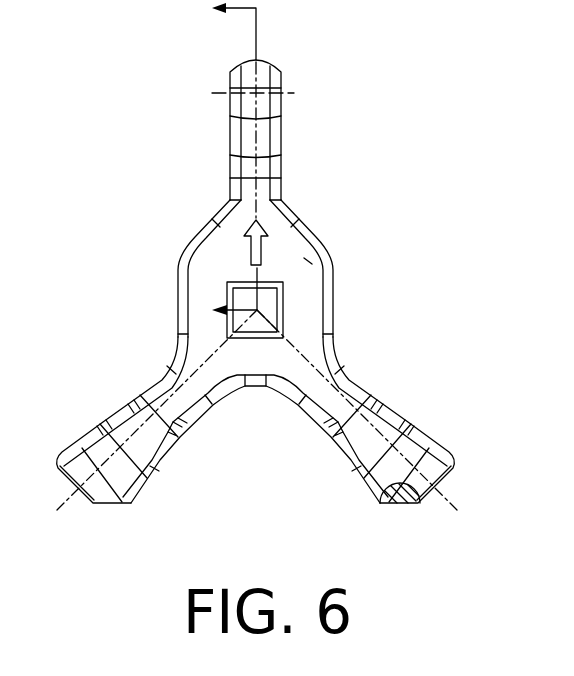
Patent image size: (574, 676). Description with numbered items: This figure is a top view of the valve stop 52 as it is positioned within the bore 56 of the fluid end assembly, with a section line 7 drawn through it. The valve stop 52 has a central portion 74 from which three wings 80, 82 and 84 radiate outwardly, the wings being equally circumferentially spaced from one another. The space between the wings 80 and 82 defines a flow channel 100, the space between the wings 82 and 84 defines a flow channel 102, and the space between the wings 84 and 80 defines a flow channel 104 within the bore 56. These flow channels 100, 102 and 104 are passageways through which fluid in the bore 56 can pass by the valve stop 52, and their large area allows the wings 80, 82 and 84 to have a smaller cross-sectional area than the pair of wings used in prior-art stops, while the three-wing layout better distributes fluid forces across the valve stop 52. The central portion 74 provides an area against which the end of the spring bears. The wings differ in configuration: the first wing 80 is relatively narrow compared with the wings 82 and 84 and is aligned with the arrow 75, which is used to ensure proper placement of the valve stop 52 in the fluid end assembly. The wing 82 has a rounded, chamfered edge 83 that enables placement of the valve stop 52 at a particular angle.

The section line 7- 7 is at (243, 161).
The valve stop 52 is at (263, 271).
The bore 56 is at (147, 144).
The central portion 74 is at (303, 268).
The arrow 75 is at (266, 231).
The first wing 80 is at (282, 70).
The wing 82 is at (432, 434).
The rounded, chamfered edge 83 is at (398, 503).
The wing 84 is at (68, 456).
The flow channel 100 is at (415, 297).
The flow channel 102 is at (281, 444).
The flow channel 104 is at (142, 224).